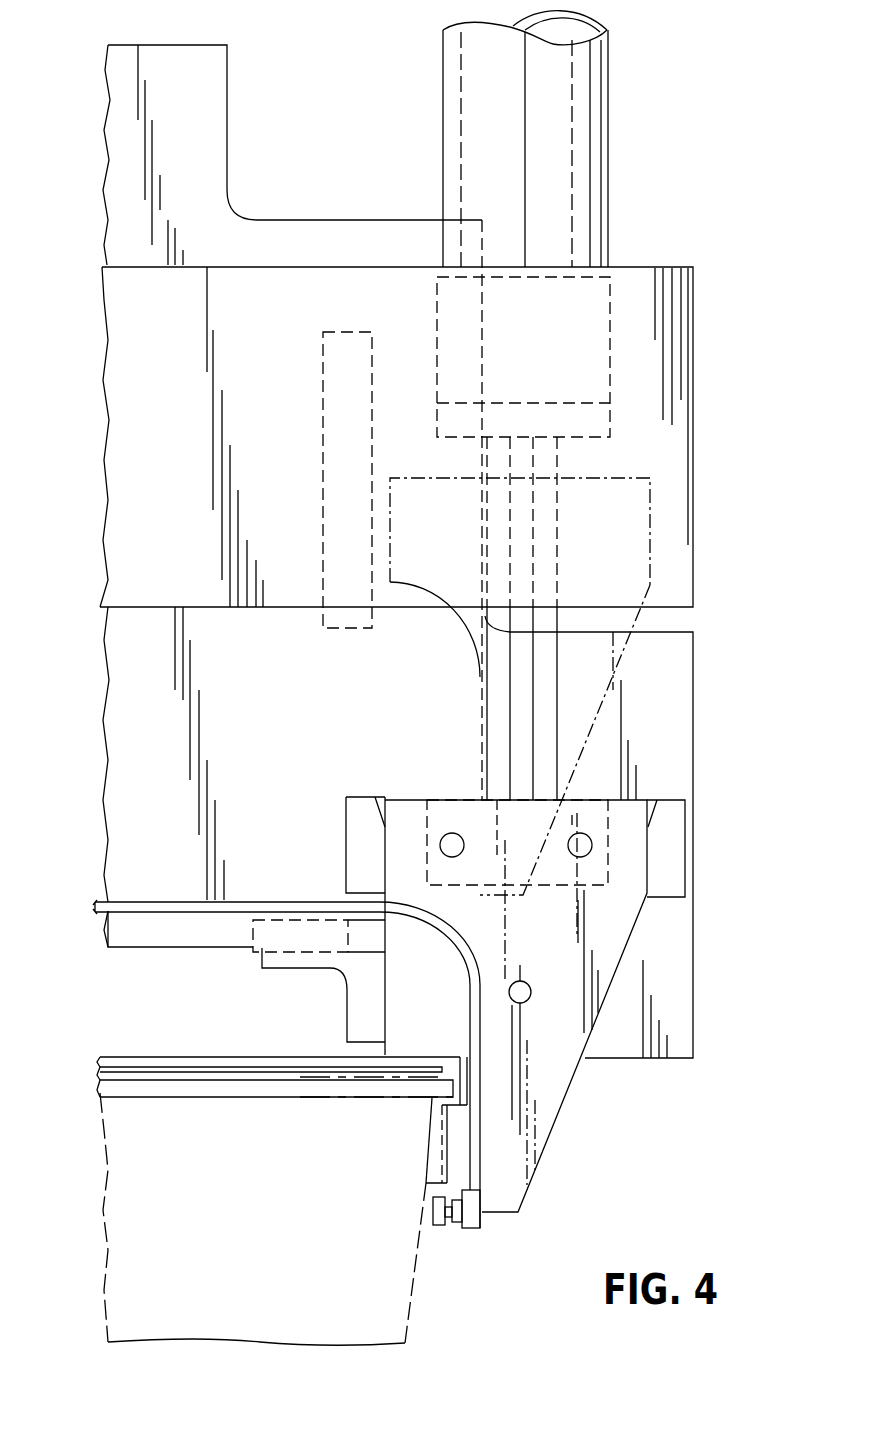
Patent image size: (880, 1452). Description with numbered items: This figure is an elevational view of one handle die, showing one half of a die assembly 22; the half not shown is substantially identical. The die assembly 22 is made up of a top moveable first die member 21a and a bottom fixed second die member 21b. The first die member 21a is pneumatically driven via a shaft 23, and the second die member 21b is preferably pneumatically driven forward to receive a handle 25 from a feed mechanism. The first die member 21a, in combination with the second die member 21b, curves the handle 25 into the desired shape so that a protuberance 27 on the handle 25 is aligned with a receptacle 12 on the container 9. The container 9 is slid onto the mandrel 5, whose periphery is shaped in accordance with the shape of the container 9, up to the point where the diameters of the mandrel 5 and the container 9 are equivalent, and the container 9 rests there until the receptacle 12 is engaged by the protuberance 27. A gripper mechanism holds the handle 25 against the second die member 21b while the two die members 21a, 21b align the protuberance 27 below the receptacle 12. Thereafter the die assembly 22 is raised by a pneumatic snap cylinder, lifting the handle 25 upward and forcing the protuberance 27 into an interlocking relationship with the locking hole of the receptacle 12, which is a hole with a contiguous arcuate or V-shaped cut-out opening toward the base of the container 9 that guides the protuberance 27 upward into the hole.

The mandrel 5 is at (100, 1055).
The container 9 is at (120, 1145).
The receptacle 12 is at (435, 1160).
The first die member 21a is at (545, 1130).
The second die member 21b is at (400, 1008).
The die assembly 22 is at (692, 997).
The shaft 23 is at (557, 730).
The handle 25 is at (200, 912).
The protuberance 27 is at (433, 1228).